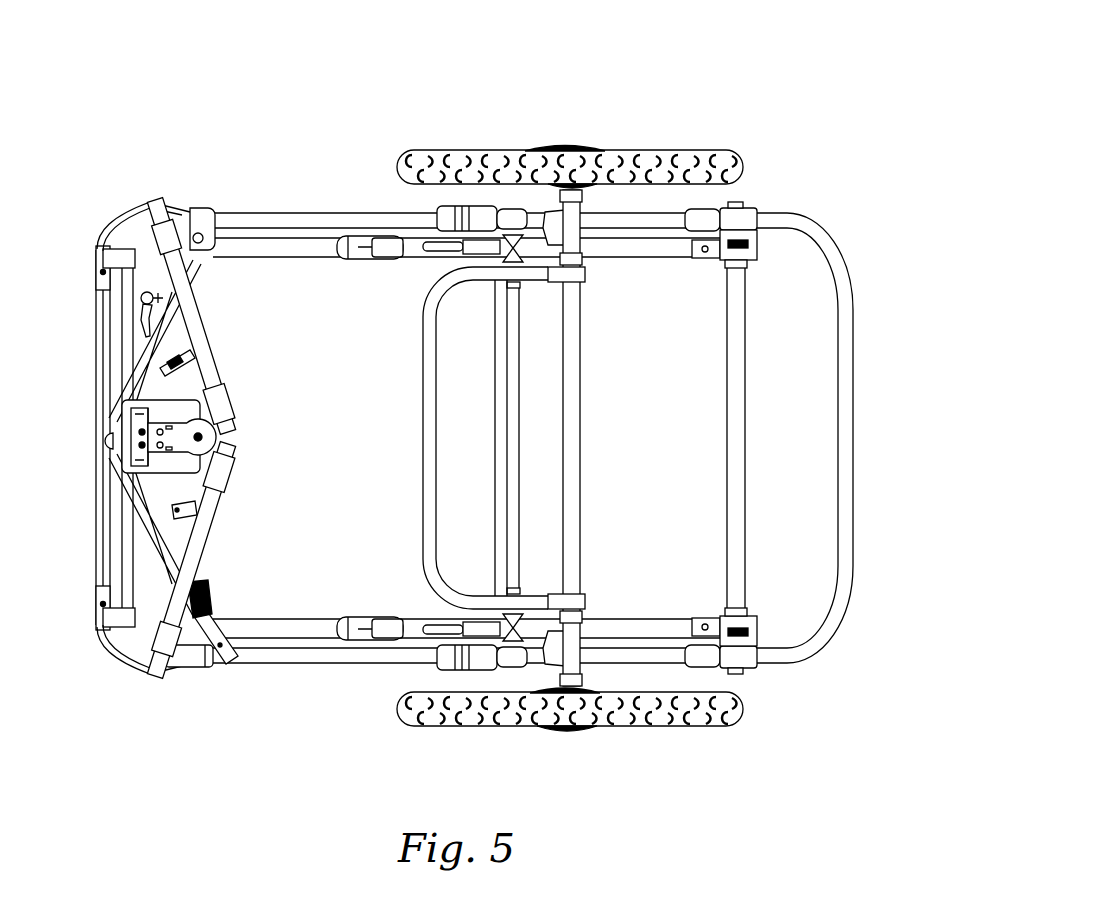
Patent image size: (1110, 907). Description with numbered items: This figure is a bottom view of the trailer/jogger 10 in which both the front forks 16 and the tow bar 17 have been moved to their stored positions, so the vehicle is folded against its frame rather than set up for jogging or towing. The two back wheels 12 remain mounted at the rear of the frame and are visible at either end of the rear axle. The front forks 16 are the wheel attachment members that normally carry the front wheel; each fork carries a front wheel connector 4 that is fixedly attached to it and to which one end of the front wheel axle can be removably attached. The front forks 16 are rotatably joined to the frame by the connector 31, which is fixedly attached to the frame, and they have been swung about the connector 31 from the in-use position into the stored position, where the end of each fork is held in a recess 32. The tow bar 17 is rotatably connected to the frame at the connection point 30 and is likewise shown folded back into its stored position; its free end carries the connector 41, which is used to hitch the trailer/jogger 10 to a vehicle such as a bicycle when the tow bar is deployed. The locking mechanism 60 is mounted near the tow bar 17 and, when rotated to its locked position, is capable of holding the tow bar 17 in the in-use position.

The trailer/jogger 10 is at (421, 94).
The back wheels 12 is at (663, 149).
The front wheel connectors 4 is at (143, 220).
The front forks 16 is at (193, 316).
The tow bar 17 is at (150, 360).
The connection point 30 is at (198, 232).
The connector 31 is at (203, 434).
The recess 32 is at (171, 666).
The connector 41 is at (226, 650).
The locking mechanism 60 is at (138, 320).